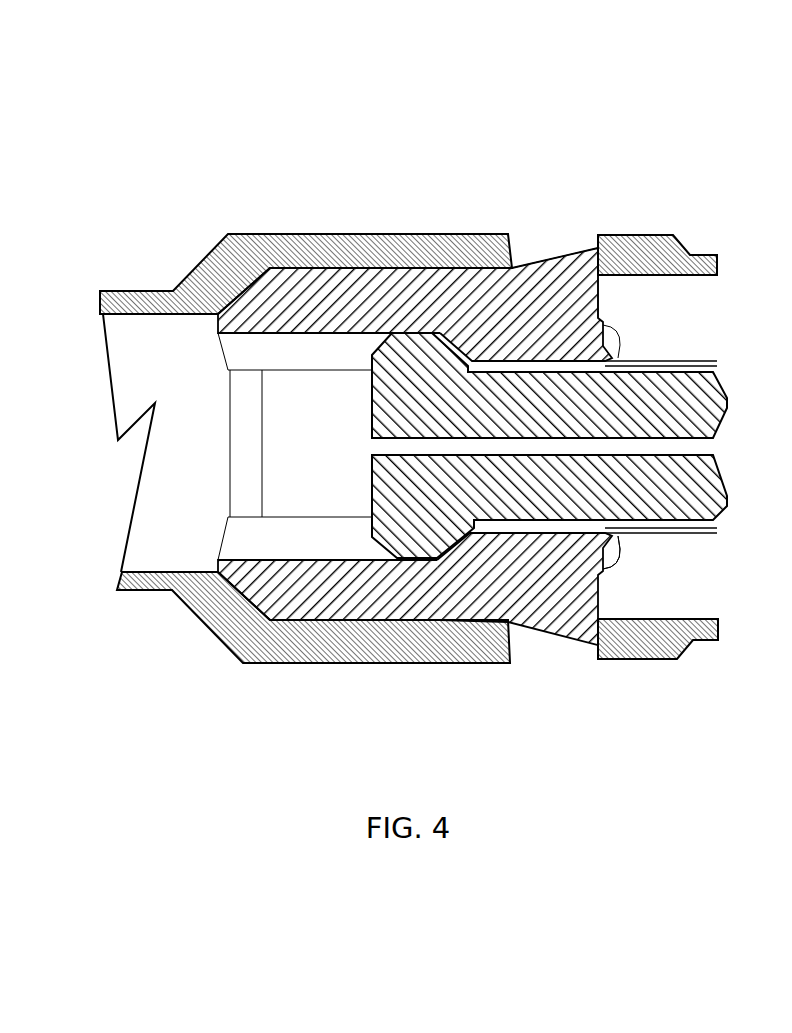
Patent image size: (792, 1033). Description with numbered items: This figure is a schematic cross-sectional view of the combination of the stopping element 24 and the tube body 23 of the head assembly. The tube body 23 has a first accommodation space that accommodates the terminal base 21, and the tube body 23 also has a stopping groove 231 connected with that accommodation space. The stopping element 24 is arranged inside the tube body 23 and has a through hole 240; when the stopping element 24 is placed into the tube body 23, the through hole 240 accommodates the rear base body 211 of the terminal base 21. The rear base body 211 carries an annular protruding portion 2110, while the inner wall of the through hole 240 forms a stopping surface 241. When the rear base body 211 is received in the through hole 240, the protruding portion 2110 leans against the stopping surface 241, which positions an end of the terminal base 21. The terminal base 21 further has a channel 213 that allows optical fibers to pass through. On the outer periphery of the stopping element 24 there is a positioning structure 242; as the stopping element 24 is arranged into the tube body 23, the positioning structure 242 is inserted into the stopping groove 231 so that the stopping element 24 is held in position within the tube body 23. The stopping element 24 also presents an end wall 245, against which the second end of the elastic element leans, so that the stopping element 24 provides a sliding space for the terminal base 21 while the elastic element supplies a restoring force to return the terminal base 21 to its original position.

The tube body 23 is at (220, 252).
The through hole 240 is at (292, 387).
The stopping element 24 is at (600, 308).
The stopping surface 241 is at (468, 527).
The terminal base 21 is at (662, 503).
The annular protruding portion 2110 is at (437, 347).
The rear base body 211 is at (372, 473).
The channel 213 is at (620, 440).
The stopping groove 231 is at (545, 248).
The positioning structure 242 is at (582, 250).
The end wall 245 is at (600, 593).